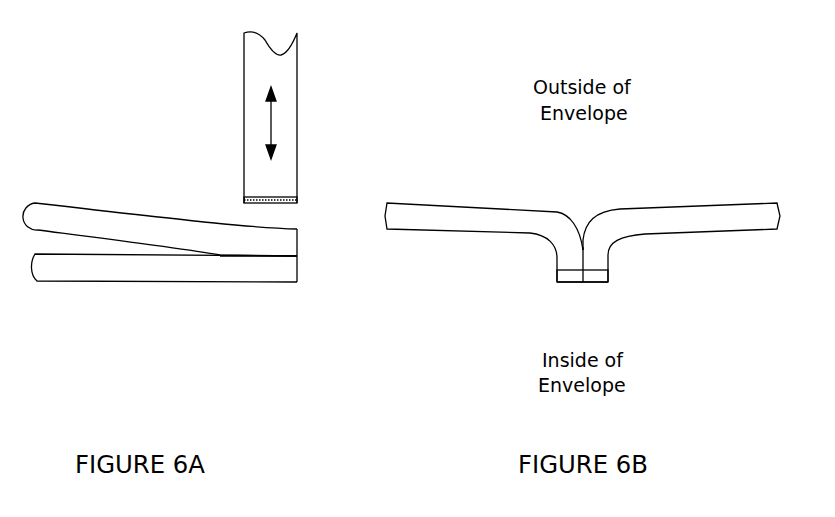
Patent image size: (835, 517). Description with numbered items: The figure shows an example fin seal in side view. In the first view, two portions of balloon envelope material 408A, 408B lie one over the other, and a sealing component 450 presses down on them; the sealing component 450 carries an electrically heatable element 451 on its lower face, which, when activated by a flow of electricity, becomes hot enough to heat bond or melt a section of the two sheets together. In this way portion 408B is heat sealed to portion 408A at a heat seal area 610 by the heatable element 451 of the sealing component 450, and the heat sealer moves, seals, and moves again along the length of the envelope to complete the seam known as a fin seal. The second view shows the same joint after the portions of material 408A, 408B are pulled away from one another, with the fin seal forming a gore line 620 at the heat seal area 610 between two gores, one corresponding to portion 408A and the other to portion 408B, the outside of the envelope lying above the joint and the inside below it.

In FIG. 6A, the sealing component 450 is at (243, 128).
In FIG. 6A, the heatable element 451 is at (297, 205).
In FIG. 6A, the balloon envelope material portion 408A is at (140, 282).
In FIG. 6B, the balloon envelope material portion 408A is at (462, 203).
In FIG. 6A, the balloon envelope material portion 408B is at (140, 222).
In FIG. 6B, the balloon envelope material portion 408B is at (713, 203).
In FIG. 6A, the heat seal area 610 is at (258, 256).
In FIG. 6B, the heat seal area 610 is at (440, 378).
In FIG. 6B, the gore line 620 is at (580, 243).